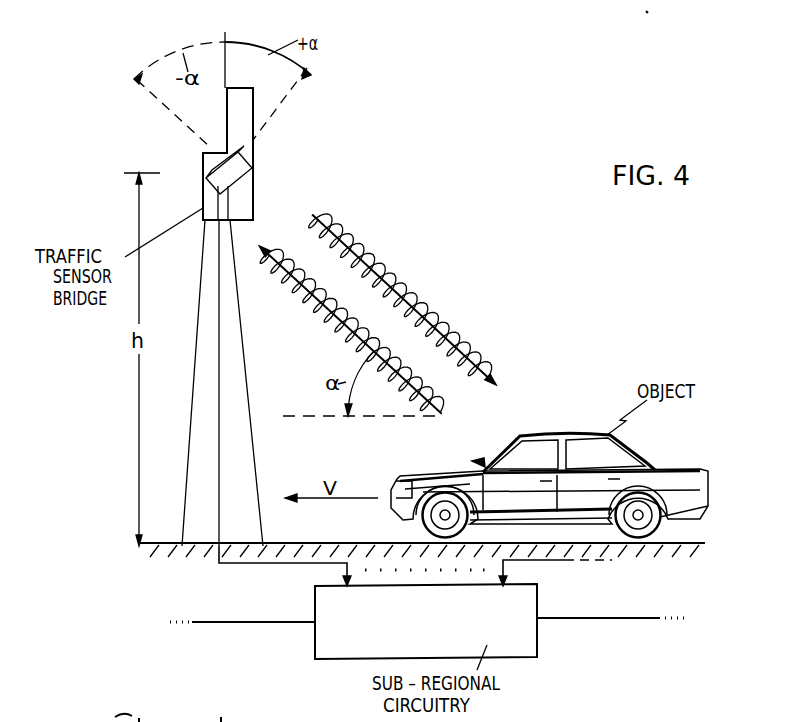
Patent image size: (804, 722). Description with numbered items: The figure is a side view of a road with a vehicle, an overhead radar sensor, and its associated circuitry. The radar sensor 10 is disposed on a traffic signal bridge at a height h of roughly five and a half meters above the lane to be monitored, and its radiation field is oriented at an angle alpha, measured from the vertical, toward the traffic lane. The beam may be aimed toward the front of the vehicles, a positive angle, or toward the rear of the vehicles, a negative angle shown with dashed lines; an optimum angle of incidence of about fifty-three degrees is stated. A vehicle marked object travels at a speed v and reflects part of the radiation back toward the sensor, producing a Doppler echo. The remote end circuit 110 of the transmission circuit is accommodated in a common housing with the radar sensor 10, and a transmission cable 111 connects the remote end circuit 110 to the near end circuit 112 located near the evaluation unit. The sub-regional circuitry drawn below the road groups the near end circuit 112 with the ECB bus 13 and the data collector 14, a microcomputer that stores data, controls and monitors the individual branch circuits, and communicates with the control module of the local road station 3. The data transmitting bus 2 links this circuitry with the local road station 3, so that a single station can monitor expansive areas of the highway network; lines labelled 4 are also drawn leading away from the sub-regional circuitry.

The radar sensor 10 is at (242, 170).
The remote end circuit 110 is at (312, 154).
The transmission cable 111 is at (611, 561).
The near end circuit 112 is at (426, 621).
The ECB bus 13 is at (426, 621).
The data collector 14 is at (426, 621).
The bus 2 is at (426, 621).
The local road station 3 is at (426, 621).
The bus line 4 is at (243, 623).